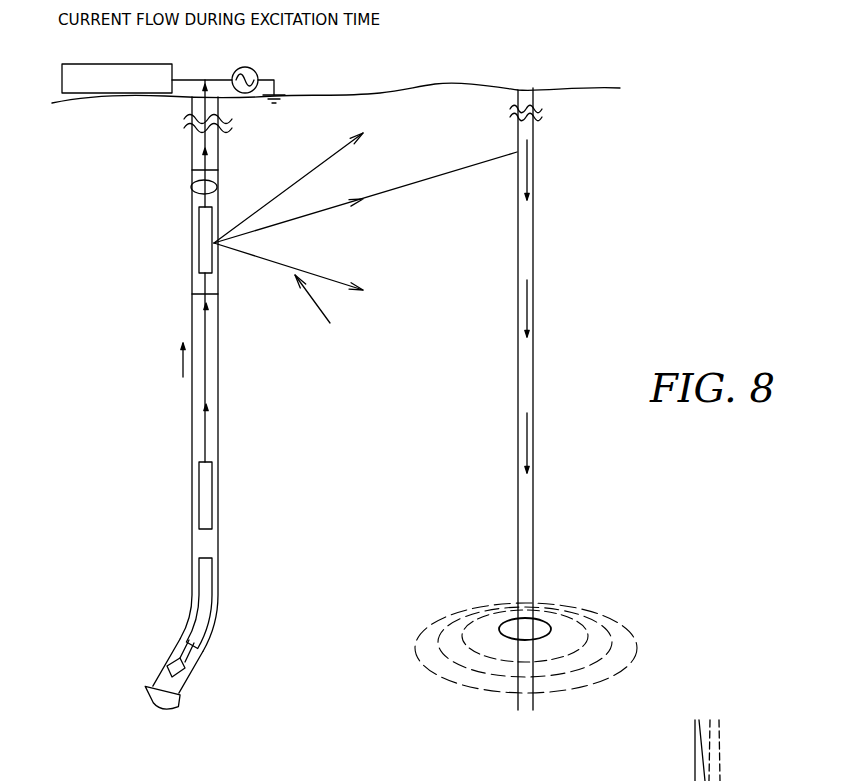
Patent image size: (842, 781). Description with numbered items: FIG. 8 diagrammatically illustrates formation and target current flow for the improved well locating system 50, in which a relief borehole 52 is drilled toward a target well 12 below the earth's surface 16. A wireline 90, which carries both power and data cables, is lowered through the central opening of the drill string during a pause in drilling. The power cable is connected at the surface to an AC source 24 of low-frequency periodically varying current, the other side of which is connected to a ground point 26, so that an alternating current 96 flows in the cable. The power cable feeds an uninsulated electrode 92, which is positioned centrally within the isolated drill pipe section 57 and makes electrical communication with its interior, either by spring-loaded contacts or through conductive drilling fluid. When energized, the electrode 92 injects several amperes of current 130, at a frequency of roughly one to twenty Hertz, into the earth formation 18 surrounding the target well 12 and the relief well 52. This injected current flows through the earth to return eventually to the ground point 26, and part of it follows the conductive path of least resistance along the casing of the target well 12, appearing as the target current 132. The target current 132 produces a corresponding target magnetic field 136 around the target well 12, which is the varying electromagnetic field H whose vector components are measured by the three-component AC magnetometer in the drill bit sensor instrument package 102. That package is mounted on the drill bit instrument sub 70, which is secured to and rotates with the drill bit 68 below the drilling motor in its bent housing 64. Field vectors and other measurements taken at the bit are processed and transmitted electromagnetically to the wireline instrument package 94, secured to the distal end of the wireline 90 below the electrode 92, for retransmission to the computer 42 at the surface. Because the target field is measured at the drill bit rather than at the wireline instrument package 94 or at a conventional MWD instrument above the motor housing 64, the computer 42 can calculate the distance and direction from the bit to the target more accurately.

The target well 12 is at (535, 212).
The earth's surface 16 is at (372, 93).
The earth formations 18 is at (414, 271).
The AC source 24 is at (258, 70).
The ground point 26 is at (280, 92).
The computer 42 is at (83, 63).
The improved well locating system 50 is at (141, 318).
The relief borehole 52 is at (221, 137).
The isolated drill pipe section 57 is at (221, 183).
The bent housing 64 is at (207, 583).
The drill bit 68 is at (160, 692).
The drill bit instrument sub 70 is at (168, 665).
The wireline 90 is at (192, 187).
The electrode 92 is at (198, 258).
The instrument package 94 is at (203, 502).
The alternating current 96 is at (183, 357).
The drill bit sensor instrument package 102 is at (187, 667).
The injected current 130 is at (373, 197).
The target current 132 is at (530, 307).
The target magnetic field 136 is at (568, 660).
The electromagnetic field H is at (612, 618).